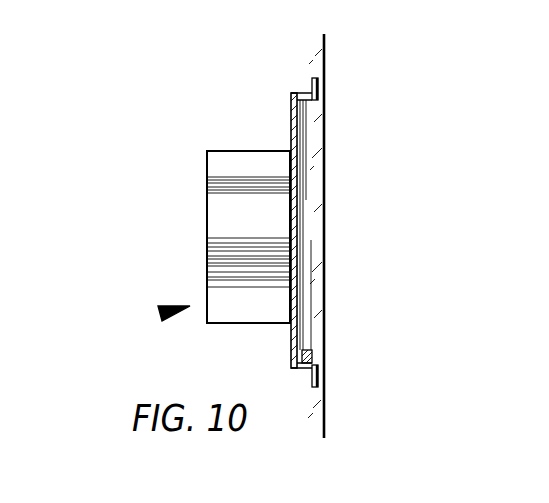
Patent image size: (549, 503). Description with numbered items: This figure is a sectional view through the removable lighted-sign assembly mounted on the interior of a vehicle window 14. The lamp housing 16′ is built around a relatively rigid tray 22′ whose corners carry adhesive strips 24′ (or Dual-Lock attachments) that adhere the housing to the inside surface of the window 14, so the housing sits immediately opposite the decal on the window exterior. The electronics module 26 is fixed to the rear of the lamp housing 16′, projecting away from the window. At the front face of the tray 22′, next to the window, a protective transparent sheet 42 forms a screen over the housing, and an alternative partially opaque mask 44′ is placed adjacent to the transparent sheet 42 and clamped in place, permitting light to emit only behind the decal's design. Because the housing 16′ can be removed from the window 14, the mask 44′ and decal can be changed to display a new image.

The vehicle window 14 is at (325, 78).
The transparent sheet 42 is at (312, 244).
The adhesive strips 24′ is at (313, 80).
The tray 22′ is at (262, 344).
The alternative mask 44′ is at (313, 346).
The electronics module 26 is at (207, 207).
The lamp housing 16′ is at (158, 314).